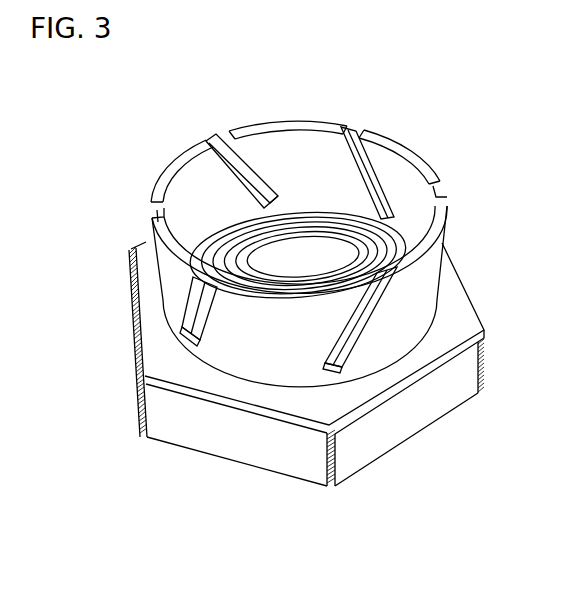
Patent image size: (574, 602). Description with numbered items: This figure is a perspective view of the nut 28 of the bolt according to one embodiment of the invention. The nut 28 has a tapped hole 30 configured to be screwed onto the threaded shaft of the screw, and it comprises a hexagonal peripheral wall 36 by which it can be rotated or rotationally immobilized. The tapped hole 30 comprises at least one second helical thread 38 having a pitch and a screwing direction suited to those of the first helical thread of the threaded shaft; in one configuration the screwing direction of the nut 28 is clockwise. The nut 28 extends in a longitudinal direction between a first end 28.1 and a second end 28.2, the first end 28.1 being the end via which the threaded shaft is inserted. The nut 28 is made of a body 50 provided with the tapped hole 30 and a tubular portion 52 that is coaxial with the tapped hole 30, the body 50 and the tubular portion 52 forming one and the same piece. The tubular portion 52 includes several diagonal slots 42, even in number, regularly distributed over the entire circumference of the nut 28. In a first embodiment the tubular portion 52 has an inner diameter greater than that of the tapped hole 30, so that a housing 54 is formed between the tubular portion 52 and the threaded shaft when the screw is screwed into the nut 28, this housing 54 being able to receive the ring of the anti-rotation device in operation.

The nut 28 is at (299, 323).
The first end 28.1 is at (320, 413).
The second end 28.2 is at (299, 224).
The tapped hole 30 is at (306, 232).
The hexagonal peripheral wall 36 is at (480, 368).
The second helical thread 38 is at (228, 227).
The diagonal slots 42 is at (200, 313).
The body 50 is at (170, 436).
The tubular portion 52 is at (150, 279).
The housing 54 is at (347, 185).